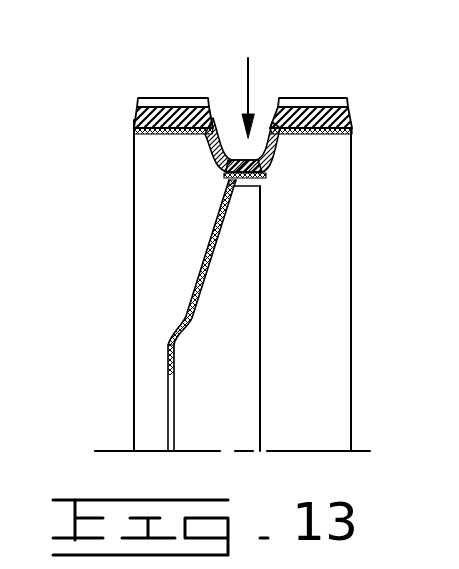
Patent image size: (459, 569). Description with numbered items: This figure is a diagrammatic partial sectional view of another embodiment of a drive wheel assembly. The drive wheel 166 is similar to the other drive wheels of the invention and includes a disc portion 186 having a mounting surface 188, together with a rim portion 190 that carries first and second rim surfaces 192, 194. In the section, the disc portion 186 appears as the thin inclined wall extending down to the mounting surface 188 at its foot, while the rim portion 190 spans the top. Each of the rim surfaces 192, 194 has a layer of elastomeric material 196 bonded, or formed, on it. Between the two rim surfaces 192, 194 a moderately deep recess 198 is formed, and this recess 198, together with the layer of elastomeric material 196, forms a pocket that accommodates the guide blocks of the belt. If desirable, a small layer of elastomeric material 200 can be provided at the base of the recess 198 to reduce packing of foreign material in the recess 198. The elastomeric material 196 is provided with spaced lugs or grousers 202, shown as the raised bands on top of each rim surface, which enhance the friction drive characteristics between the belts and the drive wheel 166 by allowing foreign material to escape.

The drive wheel 166 is at (134, 190).
The disc portion 186 is at (216, 260).
The mounting surface 188 is at (166, 343).
The rim portion 190 is at (136, 152).
The first rim surface 192 is at (136, 118).
The second rim surface 194 is at (330, 132).
The layer of elastomeric material 196 is at (201, 132).
The recess 198 is at (269, 92).
The small layer of elastomeric material 200 is at (268, 166).
The lugs or grousers 202 is at (162, 103).